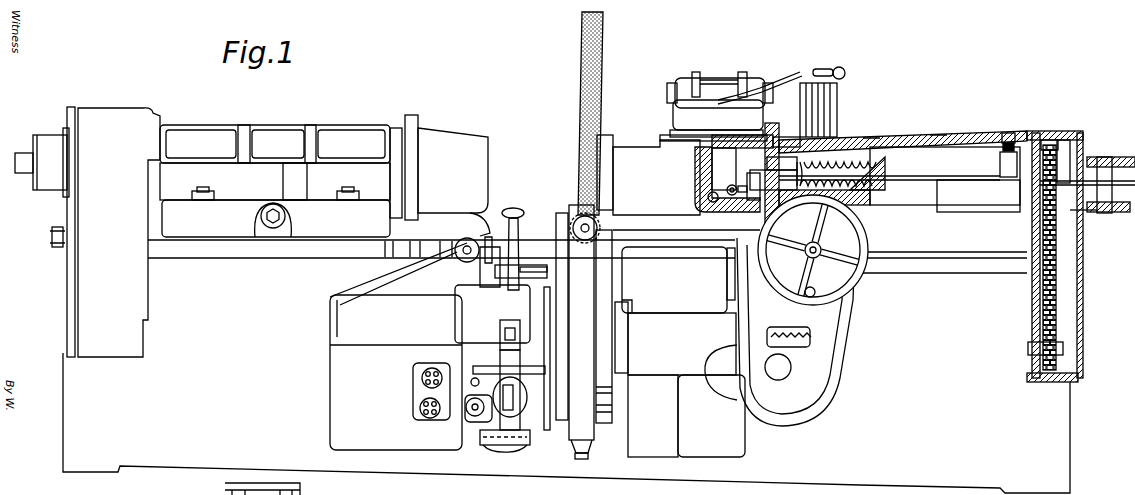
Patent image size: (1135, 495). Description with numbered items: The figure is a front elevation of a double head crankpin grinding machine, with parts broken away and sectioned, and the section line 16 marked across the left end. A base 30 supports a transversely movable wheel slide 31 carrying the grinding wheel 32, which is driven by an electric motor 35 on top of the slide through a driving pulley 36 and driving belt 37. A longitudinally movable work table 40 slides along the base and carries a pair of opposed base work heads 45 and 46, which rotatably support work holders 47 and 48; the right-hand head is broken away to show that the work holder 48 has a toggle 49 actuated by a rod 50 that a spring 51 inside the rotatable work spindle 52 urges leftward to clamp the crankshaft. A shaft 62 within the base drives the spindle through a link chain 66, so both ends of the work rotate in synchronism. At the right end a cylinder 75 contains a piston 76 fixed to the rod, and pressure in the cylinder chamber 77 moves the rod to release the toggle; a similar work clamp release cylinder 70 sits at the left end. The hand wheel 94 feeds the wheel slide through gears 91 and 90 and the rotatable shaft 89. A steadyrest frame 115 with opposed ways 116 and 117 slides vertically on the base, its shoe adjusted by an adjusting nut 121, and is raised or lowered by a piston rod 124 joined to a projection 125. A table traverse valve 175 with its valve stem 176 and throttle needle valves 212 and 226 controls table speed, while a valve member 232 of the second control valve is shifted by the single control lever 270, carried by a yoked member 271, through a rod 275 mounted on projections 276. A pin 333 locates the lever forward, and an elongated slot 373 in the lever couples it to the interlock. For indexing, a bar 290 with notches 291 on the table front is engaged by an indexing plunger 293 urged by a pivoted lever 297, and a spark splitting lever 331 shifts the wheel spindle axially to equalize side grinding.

The section line 16 is at (98, 97).
The base 30 is at (1066, 450).
The wheel slide 31 is at (628, 147).
The grinding wheel 32 is at (594, 62).
The electric motor 35 is at (717, 72).
The driving pulley 36 is at (838, 100).
The driving belt 37 is at (835, 128).
The work table 40 is at (527, 230).
The base work head 45 is at (270, 132).
The base work head 46 is at (955, 143).
The work holder 47 is at (452, 130).
The work holder 48 is at (695, 186).
The toggle 49 is at (735, 213).
The rod 50 is at (760, 177).
The spring 51 is at (873, 173).
The work spindle 52 is at (907, 158).
The shaft 62 is at (1028, 350).
The link chain 66 is at (1030, 300).
The work clamp release cylinder 70 is at (43, 136).
The cylinder 75 is at (1125, 158).
The piston 76 is at (1103, 160).
The cylinder chamber 77 is at (1090, 195).
The rotatable shaft 89 is at (782, 380).
The gear 90 is at (791, 368).
The gear 91 is at (808, 332).
The hand wheel 94 is at (860, 296).
The steadyrest frame 115 is at (588, 328).
The way 116 is at (570, 405).
The way 117 is at (602, 389).
The adjusting nut 121 is at (571, 218).
The piston rod 124 is at (577, 452).
The projection 125 is at (586, 440).
The valve 175 is at (218, 489).
The valve stem 176 is at (473, 410).
The needle valve 212 is at (420, 378).
The needle valve 226 is at (420, 410).
The valve member 232 is at (471, 381).
The control lever 270 is at (510, 207).
The yoked member 271 is at (492, 448).
The rod 275 is at (468, 361).
The projections 276 is at (477, 369).
The bar 290 is at (425, 247).
The notches 291 is at (398, 346).
The indexing plunger 293 is at (411, 257).
The lever 297 is at (492, 233).
The spark splitting lever 331 is at (800, 70).
The pin 333 is at (530, 268).
The elongated slot 373 is at (500, 335).